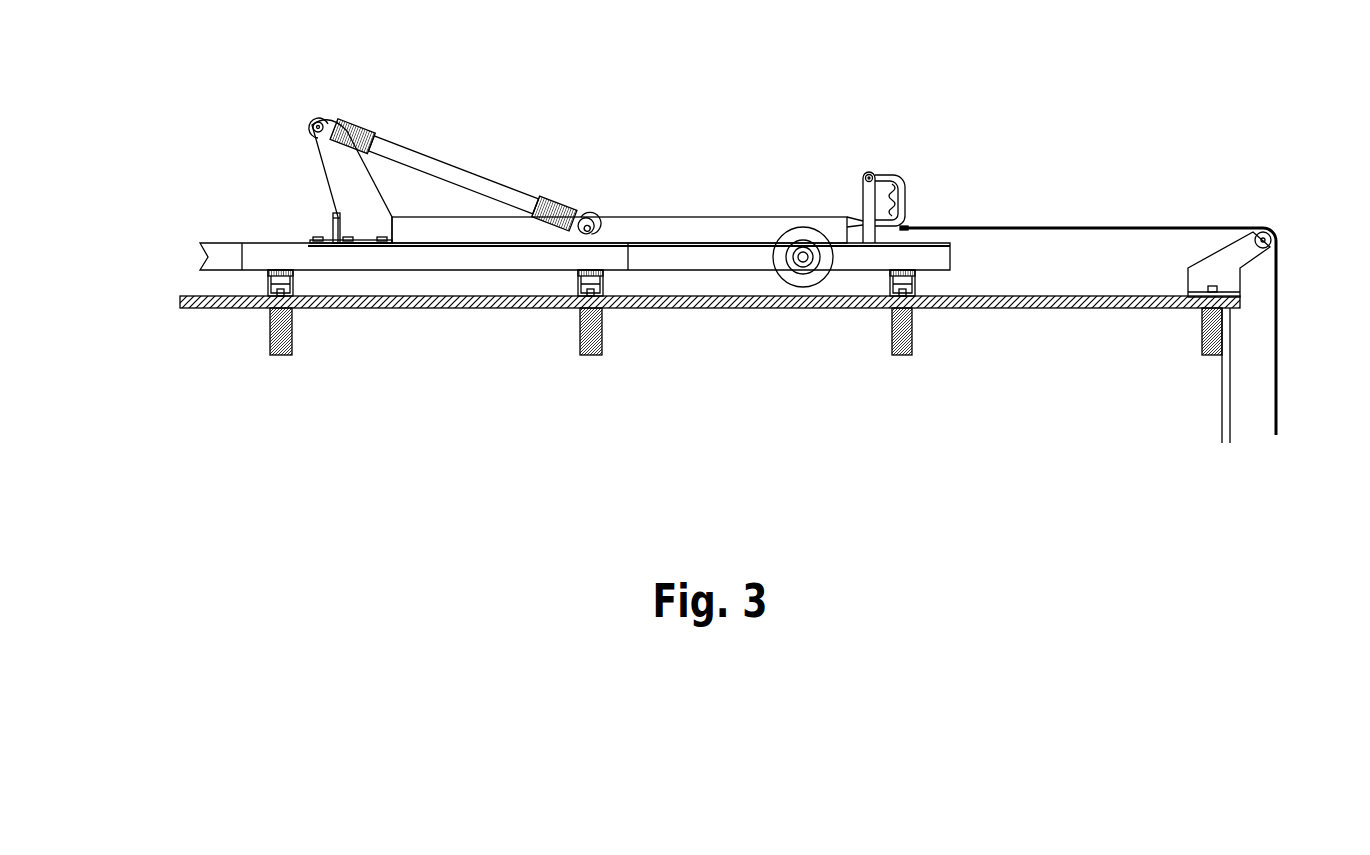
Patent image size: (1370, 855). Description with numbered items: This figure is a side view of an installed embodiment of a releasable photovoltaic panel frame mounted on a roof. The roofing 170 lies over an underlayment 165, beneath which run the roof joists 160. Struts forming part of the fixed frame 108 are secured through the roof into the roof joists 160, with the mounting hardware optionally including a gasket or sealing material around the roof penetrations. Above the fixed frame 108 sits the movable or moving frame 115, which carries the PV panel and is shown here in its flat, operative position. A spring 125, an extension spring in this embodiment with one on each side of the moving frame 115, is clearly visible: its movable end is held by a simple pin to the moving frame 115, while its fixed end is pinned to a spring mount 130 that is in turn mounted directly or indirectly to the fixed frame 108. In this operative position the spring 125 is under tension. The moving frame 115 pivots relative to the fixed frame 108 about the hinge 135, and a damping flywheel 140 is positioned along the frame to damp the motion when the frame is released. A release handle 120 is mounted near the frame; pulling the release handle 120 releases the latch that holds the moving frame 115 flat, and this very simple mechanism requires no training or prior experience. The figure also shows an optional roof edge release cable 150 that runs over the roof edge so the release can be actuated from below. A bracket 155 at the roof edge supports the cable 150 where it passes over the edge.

The fixed frame assembly 108 is at (913, 287).
The moving frame 115 is at (703, 225).
The release handle assembly 120 is at (890, 175).
The spring 125 is at (362, 130).
The spring mount 130 is at (327, 162).
The hinge 135 is at (330, 223).
The flywheel 140 is at (810, 226).
The optional roof edge release cable 150 is at (1097, 228).
The hinge bracket 155 is at (1238, 274).
The roof joists 160 is at (590, 355).
The underlayment 165 is at (667, 305).
The roofing 170 is at (1110, 296).